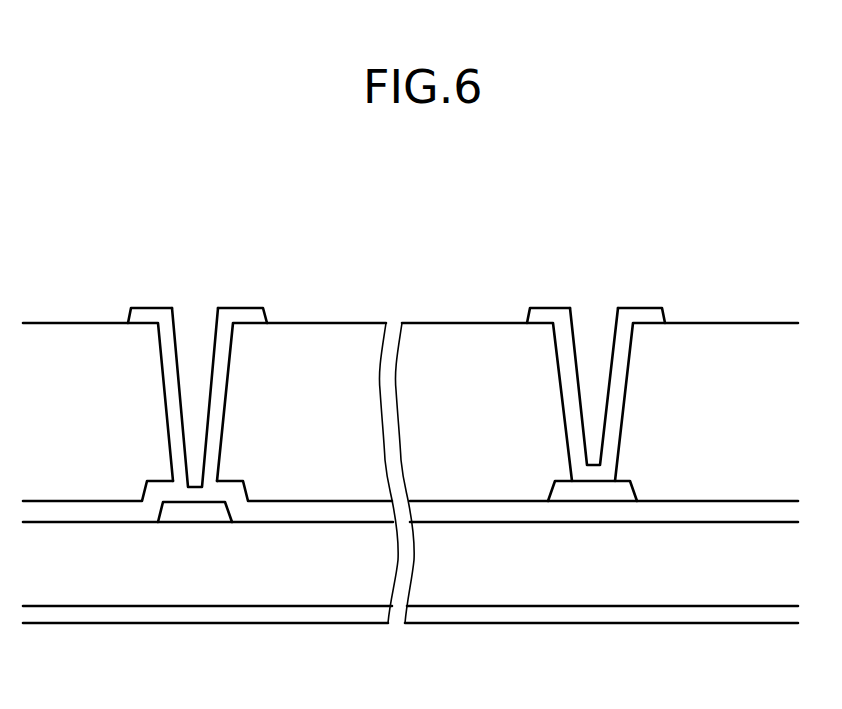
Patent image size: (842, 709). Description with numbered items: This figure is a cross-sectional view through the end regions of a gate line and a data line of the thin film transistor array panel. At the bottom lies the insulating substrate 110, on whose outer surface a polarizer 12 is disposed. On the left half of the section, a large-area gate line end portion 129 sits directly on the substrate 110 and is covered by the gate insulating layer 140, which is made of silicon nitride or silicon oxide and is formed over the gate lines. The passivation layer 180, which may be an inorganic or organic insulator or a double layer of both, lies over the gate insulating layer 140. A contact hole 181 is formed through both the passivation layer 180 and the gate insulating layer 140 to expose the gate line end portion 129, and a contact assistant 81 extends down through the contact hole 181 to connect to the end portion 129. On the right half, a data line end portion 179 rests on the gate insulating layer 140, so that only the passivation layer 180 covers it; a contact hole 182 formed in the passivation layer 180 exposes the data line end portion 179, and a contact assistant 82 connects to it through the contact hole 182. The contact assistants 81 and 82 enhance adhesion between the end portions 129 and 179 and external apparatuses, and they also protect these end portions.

The polarizer 12 is at (258, 615).
The contact assistant 81 is at (152, 313).
The contact assistant 82 is at (543, 313).
The insulating substrate 110 is at (682, 567).
The gate line end portion 129 is at (197, 510).
The gate insulating layer 140 is at (92, 510).
The data line end portion 179 is at (597, 492).
The passivation layer 180 is at (327, 427).
The contact hole 181 is at (227, 378).
The contact hole 182 is at (623, 378).